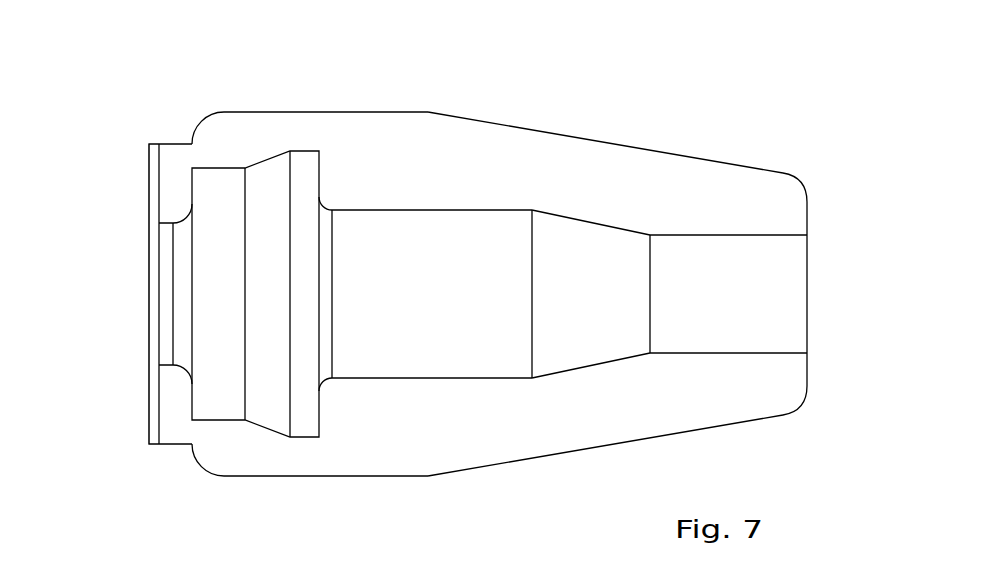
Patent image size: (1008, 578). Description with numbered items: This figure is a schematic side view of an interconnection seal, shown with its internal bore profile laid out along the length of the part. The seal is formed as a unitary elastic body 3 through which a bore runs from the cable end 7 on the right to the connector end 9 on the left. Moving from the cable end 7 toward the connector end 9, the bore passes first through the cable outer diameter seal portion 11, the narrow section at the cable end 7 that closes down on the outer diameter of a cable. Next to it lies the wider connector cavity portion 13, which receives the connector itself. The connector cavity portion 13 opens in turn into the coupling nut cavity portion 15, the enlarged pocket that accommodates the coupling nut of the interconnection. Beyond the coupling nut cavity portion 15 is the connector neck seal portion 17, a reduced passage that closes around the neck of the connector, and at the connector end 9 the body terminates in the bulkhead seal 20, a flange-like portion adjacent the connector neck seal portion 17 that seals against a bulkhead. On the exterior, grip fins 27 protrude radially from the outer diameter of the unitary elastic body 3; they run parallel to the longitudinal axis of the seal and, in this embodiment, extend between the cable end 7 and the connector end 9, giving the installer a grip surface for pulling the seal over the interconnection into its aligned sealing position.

The unitary elastic body 3 is at (497, 230).
The cable end 7 is at (828, 288).
The connector end 9 is at (122, 295).
The cable outer diameter seal portion 11 is at (705, 270).
The connector cavity portion 13 is at (423, 235).
The coupling nut cavity portion 15 is at (302, 173).
The connector neck seal portion 17 is at (171, 237).
The bulkhead seal 20 is at (150, 193).
The grip fins 27 is at (583, 180).